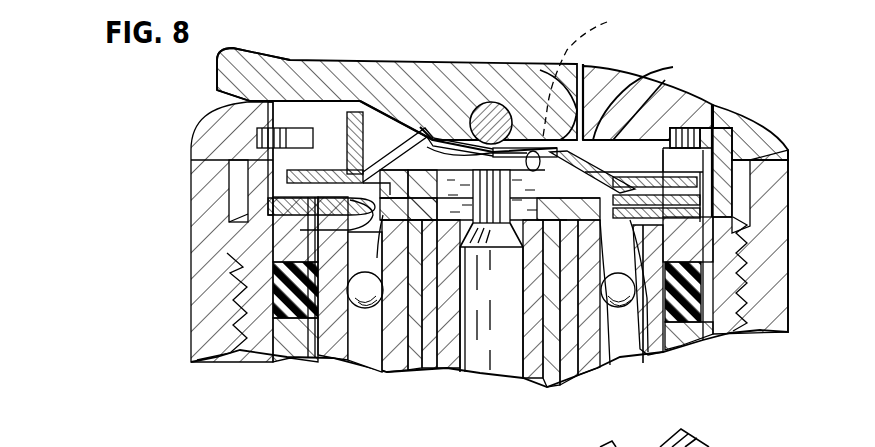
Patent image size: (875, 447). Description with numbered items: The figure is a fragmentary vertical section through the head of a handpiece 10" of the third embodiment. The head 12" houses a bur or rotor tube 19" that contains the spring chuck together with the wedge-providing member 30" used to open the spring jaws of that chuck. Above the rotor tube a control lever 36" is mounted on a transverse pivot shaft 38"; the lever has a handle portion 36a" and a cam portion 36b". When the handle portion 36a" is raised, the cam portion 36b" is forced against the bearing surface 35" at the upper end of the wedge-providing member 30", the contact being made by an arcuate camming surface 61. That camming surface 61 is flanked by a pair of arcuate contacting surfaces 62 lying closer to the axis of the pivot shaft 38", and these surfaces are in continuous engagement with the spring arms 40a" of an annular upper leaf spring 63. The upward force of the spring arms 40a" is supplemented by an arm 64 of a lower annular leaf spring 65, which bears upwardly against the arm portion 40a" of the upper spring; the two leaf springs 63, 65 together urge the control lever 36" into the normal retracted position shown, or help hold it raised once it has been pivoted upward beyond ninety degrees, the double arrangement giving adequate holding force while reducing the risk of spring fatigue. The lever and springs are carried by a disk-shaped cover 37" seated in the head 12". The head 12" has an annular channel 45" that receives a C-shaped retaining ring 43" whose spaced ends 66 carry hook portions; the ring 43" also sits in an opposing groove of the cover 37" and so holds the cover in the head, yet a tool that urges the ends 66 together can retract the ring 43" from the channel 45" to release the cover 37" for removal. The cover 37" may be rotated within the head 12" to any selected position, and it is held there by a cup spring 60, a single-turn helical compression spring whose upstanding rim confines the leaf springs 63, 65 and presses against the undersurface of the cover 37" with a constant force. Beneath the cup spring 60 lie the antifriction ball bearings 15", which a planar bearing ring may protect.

The handpiece 10 is at (793, 240).
The head 12 is at (190, 295).
The antifriction ball bearings 15 is at (373, 352).
The bur or rotor tube 19 is at (580, 350).
The wedge-providing member 30 is at (535, 372).
The bearing surface 35 is at (433, 143).
The control lever 36 is at (397, 62).
The handle portion 36a is at (217, 62).
The cam portion 36b is at (572, 90).
The disk-shaped cover 37 is at (660, 97).
The transverse pivot shaft 38 is at (492, 105).
The spring arms 40a is at (527, 147).
The retaining ring 43 is at (720, 140).
The annular channel or groove 45 is at (780, 137).
The cup spring 60 is at (372, 232).
The arcuate camming surface 61 is at (584, 66).
The arcuate contacting surfaces 62 is at (590, 74).
The annular upper leaf spring 63 is at (665, 80).
The arm 64 is at (630, 87).
The lower annular leaf spring 65 is at (647, 350).
The spaced ends 66 is at (292, 128).